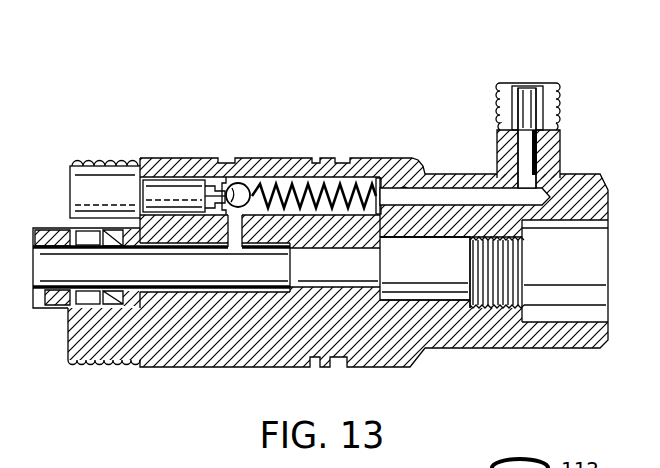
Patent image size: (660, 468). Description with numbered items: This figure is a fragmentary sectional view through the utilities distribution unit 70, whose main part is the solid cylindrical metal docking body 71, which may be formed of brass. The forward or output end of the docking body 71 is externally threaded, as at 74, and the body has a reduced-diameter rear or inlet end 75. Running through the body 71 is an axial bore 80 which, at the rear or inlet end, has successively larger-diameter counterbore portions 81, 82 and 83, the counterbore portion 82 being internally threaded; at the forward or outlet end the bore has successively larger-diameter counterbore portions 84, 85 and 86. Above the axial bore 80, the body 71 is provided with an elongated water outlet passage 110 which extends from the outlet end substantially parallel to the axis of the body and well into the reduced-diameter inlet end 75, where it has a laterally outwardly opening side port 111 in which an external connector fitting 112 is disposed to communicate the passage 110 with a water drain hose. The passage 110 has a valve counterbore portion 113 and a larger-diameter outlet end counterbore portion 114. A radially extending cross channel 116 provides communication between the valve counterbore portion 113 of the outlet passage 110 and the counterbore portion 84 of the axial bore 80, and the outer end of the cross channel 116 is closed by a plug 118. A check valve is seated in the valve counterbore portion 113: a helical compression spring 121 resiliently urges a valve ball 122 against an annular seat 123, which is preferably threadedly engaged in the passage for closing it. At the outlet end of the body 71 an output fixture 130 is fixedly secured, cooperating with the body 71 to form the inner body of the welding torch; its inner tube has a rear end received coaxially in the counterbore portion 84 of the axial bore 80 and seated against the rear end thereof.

The utilities distribution unit 70 is at (644, 88).
The docking body 71 is at (185, 367).
The external threads 74 is at (78, 170).
The reduced-diameter inlet end 75 is at (524, 349).
The axial bore 80 is at (375, 267).
The counterbore portion 81 is at (431, 243).
The counterbore portion 82 is at (508, 284).
The counterbore portion 83 is at (582, 320).
The counterbore portion 84 is at (368, 265).
The counterbore portion 85 is at (115, 289).
The counterbore portion 86 is at (95, 289).
The water outlet passage 110 is at (413, 168).
The side port 111 is at (508, 182).
The connector fitting 112 is at (560, 172).
The valve counterbore portion 113 is at (364, 187).
The outlet end counterbore portion 114 is at (72, 188).
The cross channel 116 is at (226, 252).
The plug 118 is at (226, 162).
The helical compression spring 121 is at (326, 186).
The valve ball 122 is at (248, 184).
The annular seat 123 is at (212, 178).
The output fixture 130 is at (0, 347).